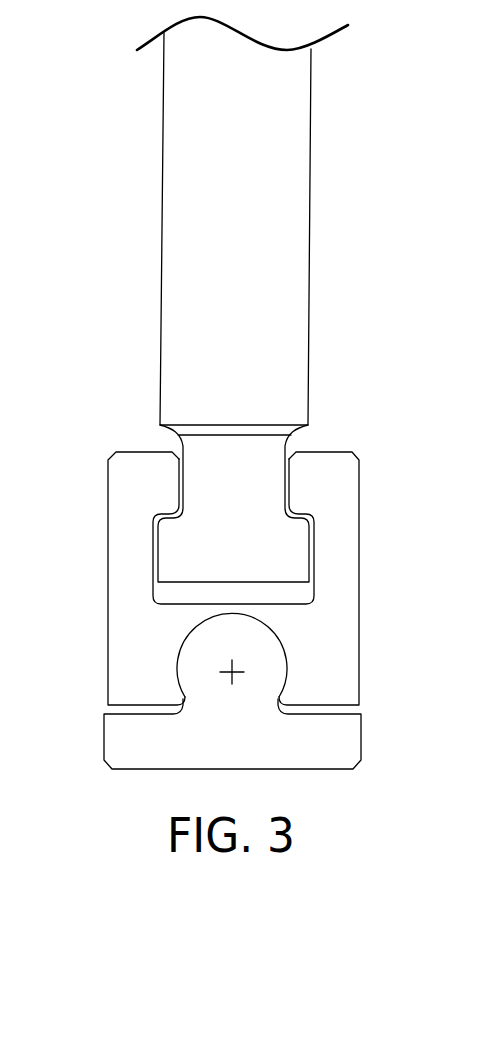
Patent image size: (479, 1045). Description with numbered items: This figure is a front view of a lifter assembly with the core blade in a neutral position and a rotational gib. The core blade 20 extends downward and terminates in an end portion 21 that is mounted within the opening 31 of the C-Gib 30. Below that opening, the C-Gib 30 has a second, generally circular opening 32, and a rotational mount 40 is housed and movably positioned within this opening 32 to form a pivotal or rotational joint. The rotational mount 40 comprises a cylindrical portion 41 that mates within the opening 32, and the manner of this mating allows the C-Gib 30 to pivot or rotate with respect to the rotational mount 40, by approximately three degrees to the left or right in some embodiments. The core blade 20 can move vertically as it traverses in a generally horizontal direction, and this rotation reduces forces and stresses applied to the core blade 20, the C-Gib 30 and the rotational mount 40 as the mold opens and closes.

The core blade 20 is at (178, 147).
The end portion 21 is at (207, 480).
The C-Gib 30 is at (143, 659).
The opening 31 is at (168, 595).
The opening 32 is at (190, 635).
The rotational mount 40 is at (160, 752).
The cylindrical portion 41 is at (237, 668).